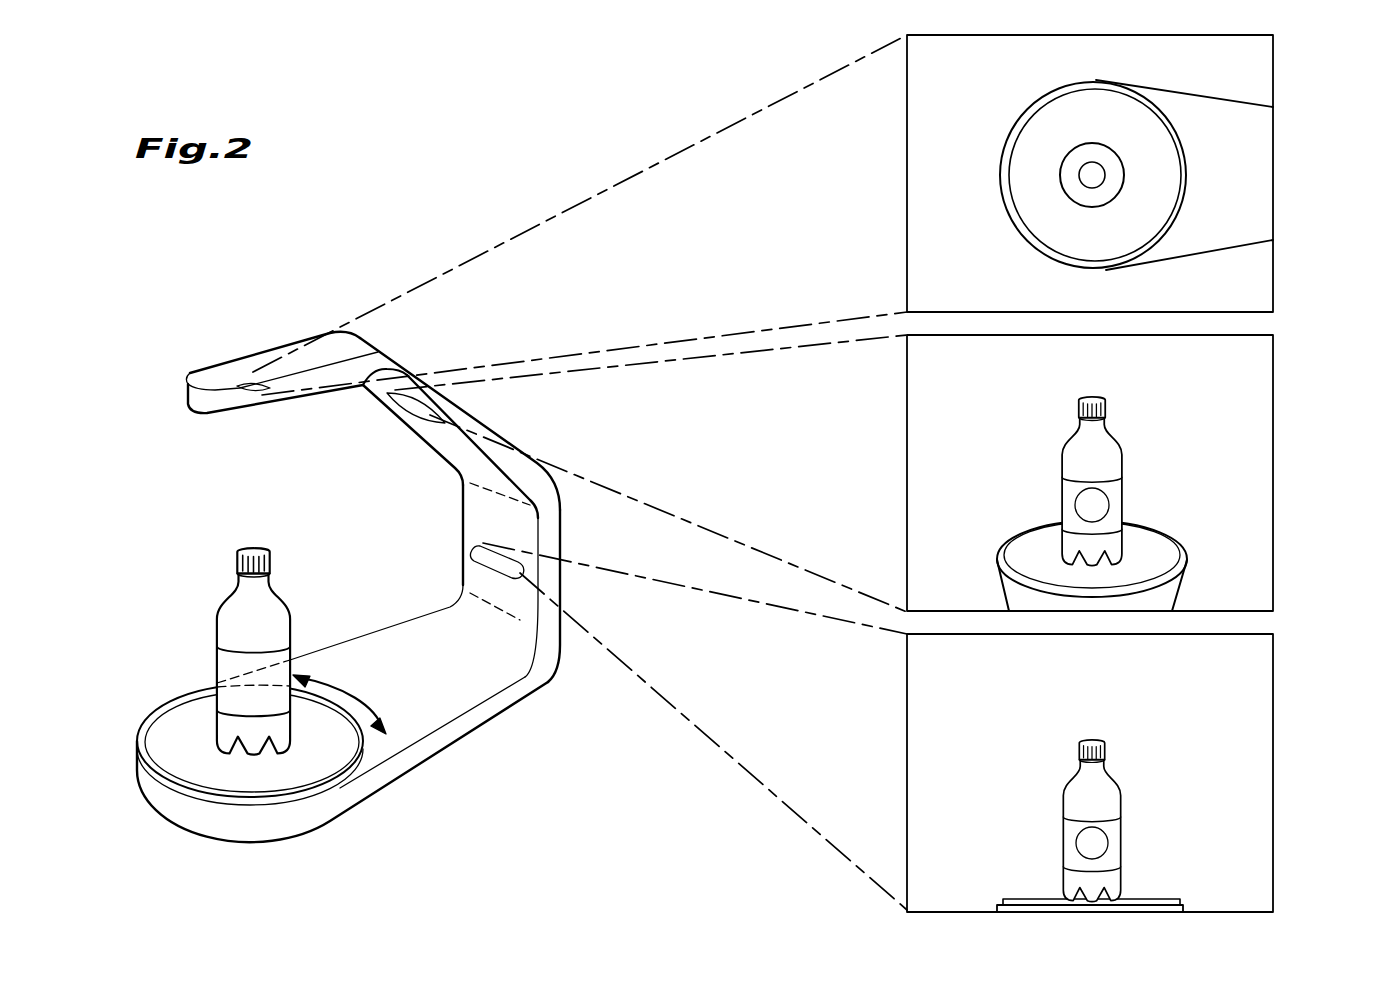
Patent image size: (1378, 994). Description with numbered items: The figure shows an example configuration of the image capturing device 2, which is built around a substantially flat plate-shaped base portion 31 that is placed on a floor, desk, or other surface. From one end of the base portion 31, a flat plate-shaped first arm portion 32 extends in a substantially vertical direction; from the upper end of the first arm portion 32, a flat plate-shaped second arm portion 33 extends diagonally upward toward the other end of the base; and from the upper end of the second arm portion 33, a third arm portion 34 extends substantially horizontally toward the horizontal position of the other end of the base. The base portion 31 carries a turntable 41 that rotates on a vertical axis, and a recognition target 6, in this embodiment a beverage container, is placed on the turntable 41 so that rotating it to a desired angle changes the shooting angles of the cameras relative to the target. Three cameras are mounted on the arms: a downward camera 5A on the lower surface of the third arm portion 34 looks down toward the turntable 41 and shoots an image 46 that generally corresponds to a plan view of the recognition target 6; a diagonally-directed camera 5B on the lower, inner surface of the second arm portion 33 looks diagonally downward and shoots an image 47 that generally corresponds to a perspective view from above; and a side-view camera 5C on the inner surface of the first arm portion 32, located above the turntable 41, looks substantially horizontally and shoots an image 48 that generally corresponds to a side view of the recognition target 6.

The image capturing device 2 is at (213, 353).
The third arm portion 34 is at (260, 352).
The second arm portion 33 is at (484, 427).
The first arm portion 32 is at (558, 577).
The base portion 31 is at (445, 738).
The downward camera 5A is at (248, 396).
The diagonally-directed camera 5B is at (398, 410).
The side-view camera 5C is at (478, 556).
The recognition target 6 is at (227, 617).
The turntable 41 is at (185, 712).
The image 46 is at (1273, 85).
The image 47 is at (1273, 420).
The image 48 is at (1273, 722).